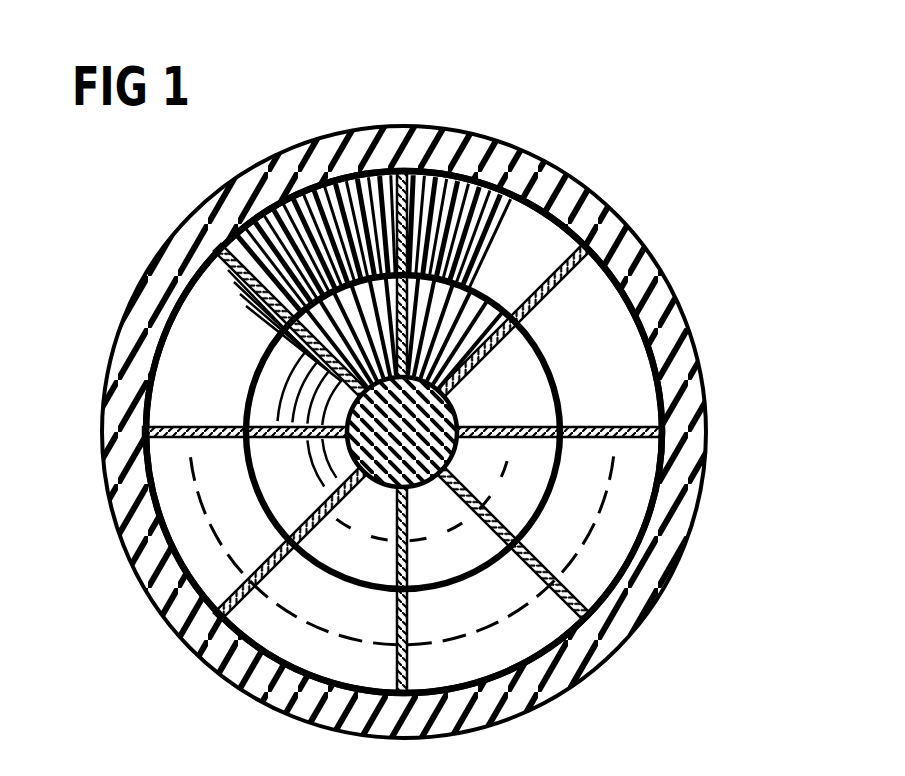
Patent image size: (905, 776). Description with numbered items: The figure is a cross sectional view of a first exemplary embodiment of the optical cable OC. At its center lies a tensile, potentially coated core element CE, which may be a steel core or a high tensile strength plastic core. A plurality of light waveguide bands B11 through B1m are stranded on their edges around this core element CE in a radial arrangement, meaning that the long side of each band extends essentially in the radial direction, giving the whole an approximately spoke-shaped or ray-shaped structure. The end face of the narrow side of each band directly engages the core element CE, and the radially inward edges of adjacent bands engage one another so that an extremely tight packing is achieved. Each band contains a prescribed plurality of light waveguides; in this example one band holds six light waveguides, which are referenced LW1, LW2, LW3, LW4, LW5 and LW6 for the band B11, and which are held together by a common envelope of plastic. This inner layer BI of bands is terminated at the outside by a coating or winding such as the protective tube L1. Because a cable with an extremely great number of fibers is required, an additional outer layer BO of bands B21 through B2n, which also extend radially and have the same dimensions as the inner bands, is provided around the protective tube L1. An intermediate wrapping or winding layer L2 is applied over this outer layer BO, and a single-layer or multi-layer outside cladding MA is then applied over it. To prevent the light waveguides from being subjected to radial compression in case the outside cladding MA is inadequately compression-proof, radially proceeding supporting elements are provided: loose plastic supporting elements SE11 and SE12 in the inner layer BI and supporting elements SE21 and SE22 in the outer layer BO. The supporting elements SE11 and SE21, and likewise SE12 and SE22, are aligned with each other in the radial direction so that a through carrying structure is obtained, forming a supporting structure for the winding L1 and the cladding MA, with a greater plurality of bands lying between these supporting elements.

The outside cladding MA is at (458, 152).
The optical cable OC is at (541, 161).
The band of outer layer B21 is at (241, 226).
The band of outer layer B2n is at (224, 233).
The supporting element SE21 is at (574, 260).
The supporting element SE11 is at (484, 346).
The supporting element SE12 is at (532, 426).
The supporting element SE22 is at (571, 442).
The light waveguide LW1 is at (273, 291).
The light waveguide LW2 is at (276, 320).
The light waveguide LW3 is at (286, 347).
The light waveguide LW4 is at (296, 375).
The light waveguide LW5 is at (321, 458).
The light waveguide LW6 is at (372, 469).
The band of inner layer B1m is at (345, 378).
The band of inner layer B11 is at (372, 394).
The core element CE is at (385, 478).
The protective tube L1 is at (490, 567).
The intermediate wrapping or winding layer L2 is at (603, 597).
The outer layer of bands BO is at (632, 505).
The inner layer of bands BI is at (523, 483).